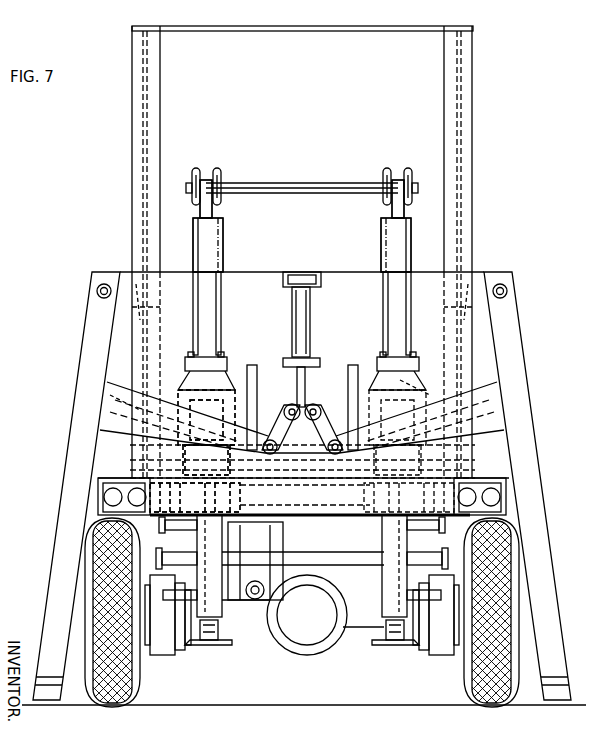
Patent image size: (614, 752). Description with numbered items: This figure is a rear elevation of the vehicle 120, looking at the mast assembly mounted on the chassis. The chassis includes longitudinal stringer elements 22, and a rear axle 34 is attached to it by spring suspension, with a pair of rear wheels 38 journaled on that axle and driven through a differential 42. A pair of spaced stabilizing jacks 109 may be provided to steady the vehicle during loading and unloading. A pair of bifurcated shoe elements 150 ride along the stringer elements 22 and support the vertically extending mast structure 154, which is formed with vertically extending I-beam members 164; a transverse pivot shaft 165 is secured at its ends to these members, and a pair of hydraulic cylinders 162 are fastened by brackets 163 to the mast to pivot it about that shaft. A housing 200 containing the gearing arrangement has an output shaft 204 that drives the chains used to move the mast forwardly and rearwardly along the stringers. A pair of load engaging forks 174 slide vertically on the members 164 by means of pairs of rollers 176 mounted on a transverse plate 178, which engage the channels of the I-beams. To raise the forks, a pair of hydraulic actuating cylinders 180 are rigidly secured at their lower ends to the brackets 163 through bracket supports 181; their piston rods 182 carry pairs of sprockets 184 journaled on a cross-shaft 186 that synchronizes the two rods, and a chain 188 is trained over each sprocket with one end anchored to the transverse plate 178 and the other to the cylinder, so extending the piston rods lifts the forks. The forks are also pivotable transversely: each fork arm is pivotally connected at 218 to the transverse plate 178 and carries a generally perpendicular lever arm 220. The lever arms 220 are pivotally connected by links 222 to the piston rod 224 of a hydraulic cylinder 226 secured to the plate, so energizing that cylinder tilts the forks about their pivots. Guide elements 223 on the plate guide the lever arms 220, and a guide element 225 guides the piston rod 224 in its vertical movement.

The mast structure 154 is at (128, 146).
The I-beam members 164 is at (138, 190).
The vehicle 120 is at (78, 228).
The rollers 176 is at (135, 283).
The pivotal connection 218 is at (94, 285).
The sprockets 184 is at (218, 168).
The cross-shaft 186 is at (294, 182).
The piston rods 182 is at (212, 210).
The hydraulic actuating cylinders 180 is at (224, 246).
The transverse plate 178 is at (276, 272).
The chain 188 is at (198, 310).
The bracket supports 181 is at (193, 390).
The hydraulic cylinders 162 is at (115, 400).
The lever arm 220 is at (115, 415).
The brackets 163 is at (150, 440).
The load engaging forks 174 is at (75, 448).
The bifurcated shoe elements 150 is at (458, 470).
The stringer elements 22 is at (232, 497).
The transverse pivot shaft 165 is at (305, 495).
The housing 200 is at (285, 555).
The output shaft 204 is at (342, 565).
The stabilizing jacks 109 is at (218, 645).
The differential 42 is at (292, 648).
The rear axle 34 is at (350, 630).
The rear wheels 38 is at (140, 680).
The links 222 is at (290, 422).
The guide elements 223 is at (250, 375).
The piston rod 224 is at (307, 380).
The guide element 225 is at (292, 360).
The hydraulic cylinder 226 is at (310, 322).